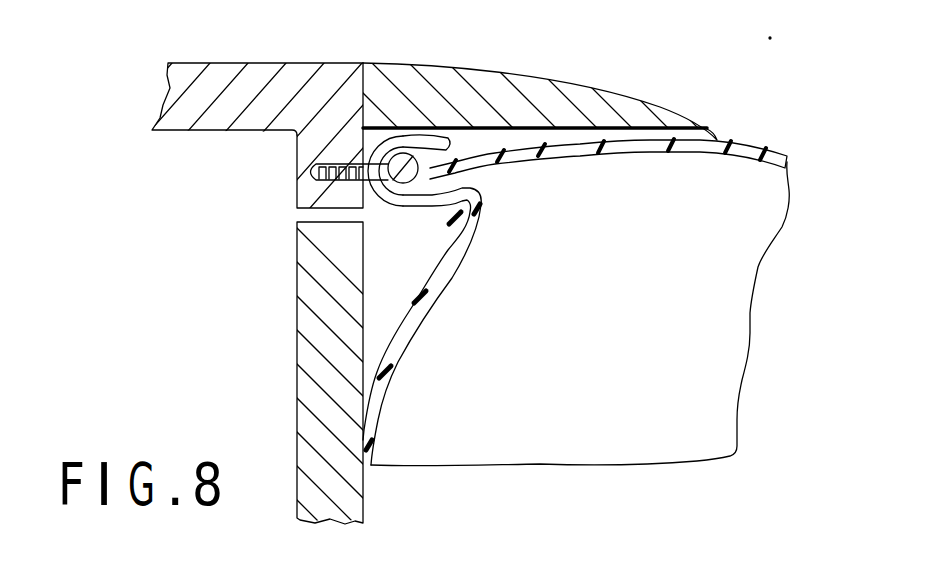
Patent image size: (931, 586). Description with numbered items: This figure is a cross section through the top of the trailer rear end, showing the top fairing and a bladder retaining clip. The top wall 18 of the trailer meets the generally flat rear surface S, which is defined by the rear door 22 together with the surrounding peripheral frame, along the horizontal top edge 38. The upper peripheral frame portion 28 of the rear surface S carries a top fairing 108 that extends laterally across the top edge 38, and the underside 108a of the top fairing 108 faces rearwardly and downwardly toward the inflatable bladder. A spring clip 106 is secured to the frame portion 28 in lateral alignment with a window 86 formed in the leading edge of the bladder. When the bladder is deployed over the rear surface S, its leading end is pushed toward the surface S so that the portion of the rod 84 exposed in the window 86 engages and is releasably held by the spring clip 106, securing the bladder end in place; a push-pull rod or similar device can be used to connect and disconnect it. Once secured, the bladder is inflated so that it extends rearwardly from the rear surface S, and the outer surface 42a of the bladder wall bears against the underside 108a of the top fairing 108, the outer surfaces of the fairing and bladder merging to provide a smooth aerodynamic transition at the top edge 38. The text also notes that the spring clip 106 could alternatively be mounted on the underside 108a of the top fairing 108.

The top wall 18 is at (290, 63).
The top edge 38 is at (364, 63).
The upper peripheral frame portion 28 is at (363, 100).
The top fairing 108 is at (546, 64).
The underside of top fairing 108a is at (561, 148).
The outer surface of bladder wall 42a is at (757, 148).
The window 86 is at (360, 190).
The rod 84 is at (395, 204).
The spring clip 106 is at (462, 220).
The rear door 22 is at (297, 352).
The rear surface S is at (378, 503).